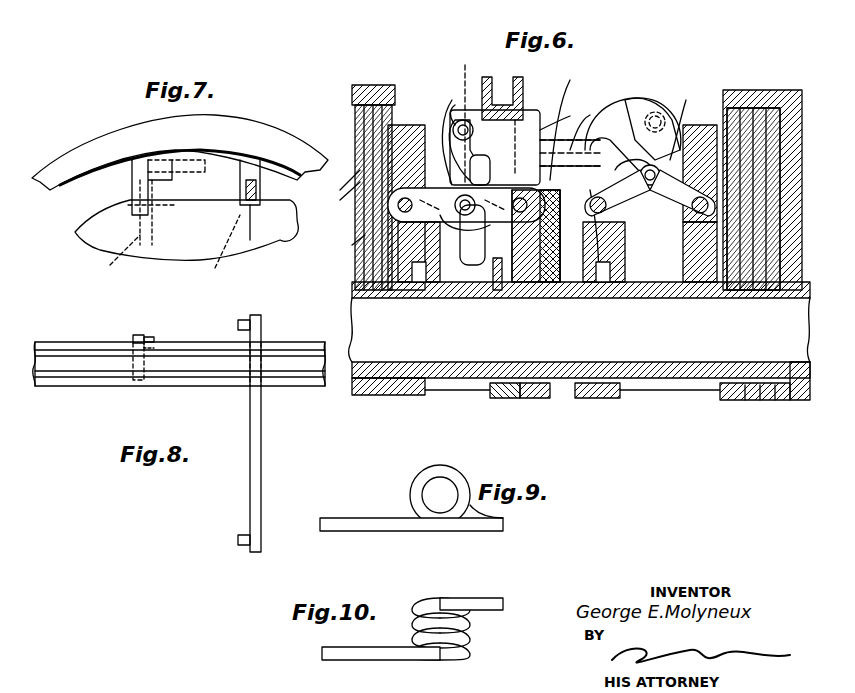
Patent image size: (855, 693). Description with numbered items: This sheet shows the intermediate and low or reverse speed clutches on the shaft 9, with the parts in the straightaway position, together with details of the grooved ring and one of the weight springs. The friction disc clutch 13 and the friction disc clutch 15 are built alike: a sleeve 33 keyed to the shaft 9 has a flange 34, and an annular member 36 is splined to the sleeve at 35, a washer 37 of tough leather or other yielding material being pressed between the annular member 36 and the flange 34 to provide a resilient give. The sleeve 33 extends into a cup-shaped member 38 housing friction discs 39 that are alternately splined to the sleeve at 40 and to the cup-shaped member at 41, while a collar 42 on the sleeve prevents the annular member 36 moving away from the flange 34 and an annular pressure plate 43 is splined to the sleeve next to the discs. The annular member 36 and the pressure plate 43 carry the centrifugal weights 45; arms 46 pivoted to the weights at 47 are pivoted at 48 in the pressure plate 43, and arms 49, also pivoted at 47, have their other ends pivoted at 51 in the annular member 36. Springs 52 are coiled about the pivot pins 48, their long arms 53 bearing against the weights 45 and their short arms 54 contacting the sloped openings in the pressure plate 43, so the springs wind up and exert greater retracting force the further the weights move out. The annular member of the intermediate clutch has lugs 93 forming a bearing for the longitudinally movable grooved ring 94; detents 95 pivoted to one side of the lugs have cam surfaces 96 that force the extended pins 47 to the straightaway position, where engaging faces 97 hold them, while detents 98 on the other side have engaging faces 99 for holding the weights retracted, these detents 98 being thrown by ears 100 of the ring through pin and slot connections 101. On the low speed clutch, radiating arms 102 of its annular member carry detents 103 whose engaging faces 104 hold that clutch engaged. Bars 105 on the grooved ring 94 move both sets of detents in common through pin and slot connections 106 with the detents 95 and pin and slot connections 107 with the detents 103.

In FIG. 6, the shaft 9 is at (652, 378).
In FIG. 6, the friction disc clutch 13 is at (674, 90).
In FIG. 6, the friction disc clutch 15 is at (436, 98).
In FIG. 6, the sleeve 33 is at (475, 378).
In FIG. 6, the flange 34 is at (580, 140).
In FIG. 6, the spline 35 is at (590, 398).
In FIG. 6, the annular member 36 is at (505, 398).
In FIG. 7, the annular member 36 is at (76, 232).
In FIG. 6, the washer 37 is at (540, 398).
In FIG. 6, the cup-shaped member 38 is at (373, 86).
In FIG. 6, the friction discs 39 is at (775, 400).
In FIG. 6, the spline 40 is at (352, 290).
In FIG. 6, the spline 41 is at (356, 108).
In FIG. 6, the collar 42 is at (493, 262).
In FIG. 6, the annular pressure plate 43 is at (388, 134).
In FIG. 6, the centrifugal weights 45 is at (653, 192).
In FIG. 6, the arms 46 is at (490, 222).
In FIG. 6, the pivot pins 47 is at (465, 215).
In FIG. 6, the pivot pins 48 is at (530, 282).
In FIG. 6, the arms 49 is at (398, 250).
In FIG. 6, the pivot 51 is at (430, 225).
In FIG. 6, the springs 52 is at (352, 245).
In FIG. 9, the springs 52 is at (426, 472).
In FIG. 10, the springs 52 is at (470, 633).
In FIG. 9, the long arms 53 is at (357, 518).
In FIG. 10, the long arms 53 is at (372, 660).
In FIG. 9, the short arms 54 is at (492, 532).
In FIG. 10, the short arms 54 is at (497, 598).
In FIG. 6, the lugs 93 is at (538, 112).
In FIG. 6, the grooved ring 94 is at (520, 78).
In FIG. 7, the grooved ring 94 is at (76, 152).
In FIG. 8, the grooved ring 94 is at (68, 386).
In FIG. 6, the detents 95 is at (452, 115).
In FIG. 7, the detents 95 is at (220, 250).
In FIG. 6, the cam surfaces 96 is at (445, 105).
In FIG. 6, the engaging faces 97 is at (460, 214).
In FIG. 6, the detents 98 is at (491, 182).
In FIG. 7, the detents 98 is at (119, 259).
In FIG. 6, the engaging faces 99 is at (500, 265).
In FIG. 6, the ears 100 is at (565, 108).
In FIG. 7, the ears 100 is at (130, 162).
In FIG. 8, the ears 100 is at (125, 336).
In FIG. 6, the pin and slot connections 101 is at (595, 125).
In FIG. 7, the pin and slot connections 101 is at (170, 202).
In FIG. 8, the pin and slot connections 101 is at (154, 337).
In FIG. 6, the radiating arms 102 is at (650, 100).
In FIG. 6, the detents 103 is at (680, 100).
In FIG. 6, the engaging faces 104 is at (625, 177).
In FIG. 6, the bars 105 is at (575, 119).
In FIG. 7, the bars 105 is at (258, 238).
In FIG. 8, the bars 105 is at (261, 436).
In FIG. 6, the pin and slot connections 106 is at (467, 121).
In FIG. 8, the pin and slot connections 106 is at (238, 325).
In FIG. 6, the pin and slot connections 107 is at (696, 100).
In FIG. 8, the pin and slot connections 107 is at (238, 542).